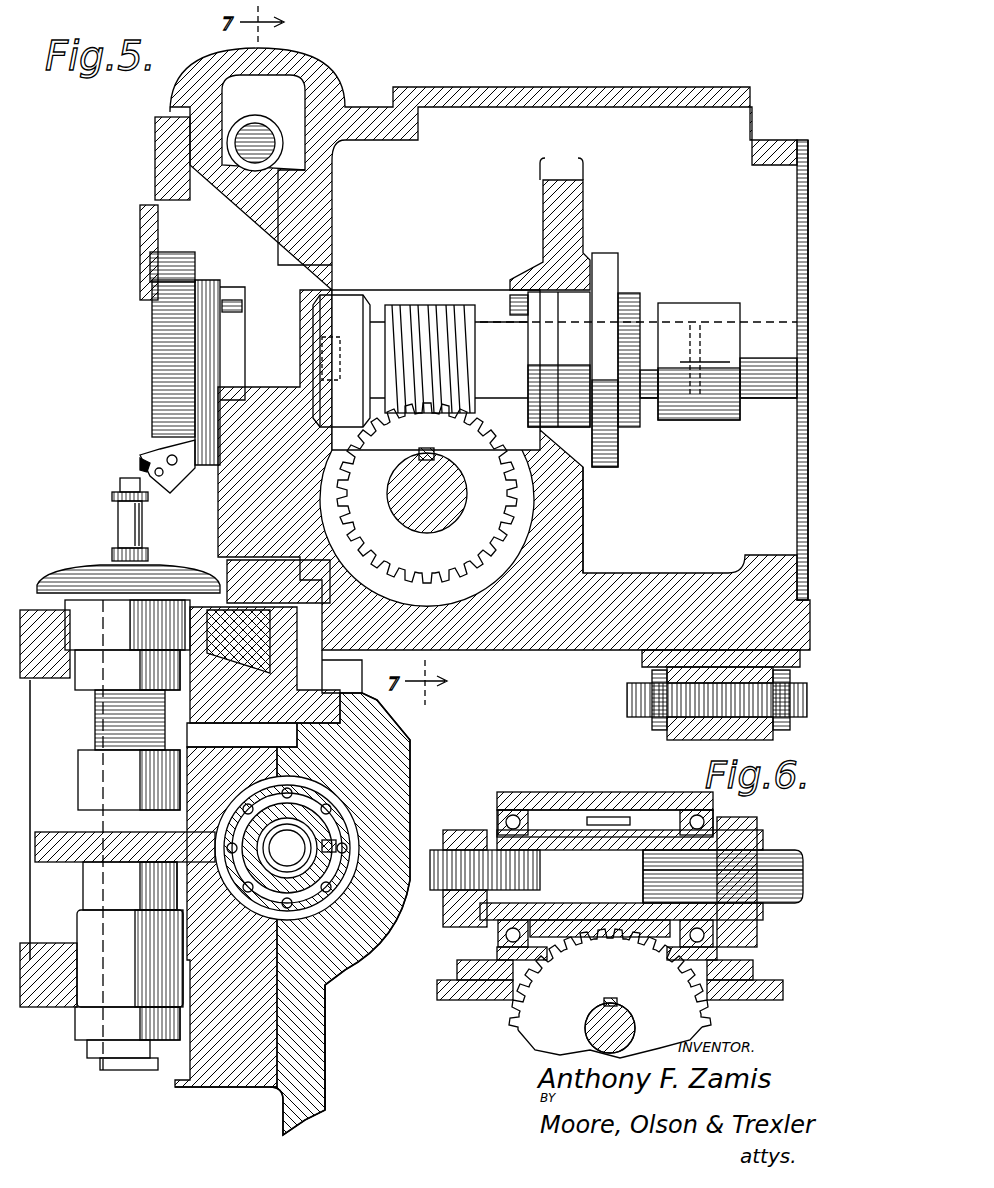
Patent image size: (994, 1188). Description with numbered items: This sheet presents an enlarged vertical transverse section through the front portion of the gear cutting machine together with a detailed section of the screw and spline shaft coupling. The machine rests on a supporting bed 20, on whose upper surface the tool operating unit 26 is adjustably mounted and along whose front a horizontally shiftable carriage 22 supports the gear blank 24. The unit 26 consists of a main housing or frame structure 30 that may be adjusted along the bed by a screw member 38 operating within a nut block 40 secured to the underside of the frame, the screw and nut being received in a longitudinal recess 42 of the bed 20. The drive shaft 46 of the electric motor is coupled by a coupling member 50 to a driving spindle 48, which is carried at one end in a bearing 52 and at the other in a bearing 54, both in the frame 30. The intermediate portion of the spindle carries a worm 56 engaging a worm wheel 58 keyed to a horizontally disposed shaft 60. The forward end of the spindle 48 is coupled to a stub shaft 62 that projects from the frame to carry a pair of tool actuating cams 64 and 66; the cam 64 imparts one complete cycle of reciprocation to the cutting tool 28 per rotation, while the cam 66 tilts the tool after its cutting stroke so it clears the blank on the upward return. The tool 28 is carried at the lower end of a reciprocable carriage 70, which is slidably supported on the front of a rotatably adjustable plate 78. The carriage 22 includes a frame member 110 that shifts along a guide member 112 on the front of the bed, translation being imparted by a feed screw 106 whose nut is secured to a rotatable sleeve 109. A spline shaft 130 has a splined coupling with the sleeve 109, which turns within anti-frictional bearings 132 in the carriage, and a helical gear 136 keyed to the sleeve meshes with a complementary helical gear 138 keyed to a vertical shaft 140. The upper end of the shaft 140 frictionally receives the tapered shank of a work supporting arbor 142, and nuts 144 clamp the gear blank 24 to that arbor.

In FIG. 5, the supporting bed 20 is at (270, 1118).
In FIG. 5, the horizontally shiftable carriage 22 is at (70, 545).
In FIG. 5, the gear blank 24 is at (94, 492).
In FIG. 5, the tool operating unit 26 is at (544, 73).
In FIG. 5, the cutting tool 28 is at (158, 453).
In FIG. 5, the main housing or frame structure 30 is at (583, 500).
In FIG. 5, the screw member 38 is at (627, 710).
In FIG. 5, the nut block 40 is at (706, 585).
In FIG. 5, the longitudinal recess 42 is at (511, 718).
In FIG. 5, the drive shaft 46 is at (762, 402).
In FIG. 5, the driving spindle 48 is at (652, 403).
In FIG. 5, the coupling member 50 is at (683, 312).
In FIG. 5, the bearing 52 is at (545, 263).
In FIG. 5, the bearing 54 is at (280, 300).
In FIG. 5, the worm 56 is at (459, 304).
In FIG. 5, the worm wheel 58 is at (427, 493).
In FIG. 5, the horizontally disposed shaft 60 is at (442, 478).
In FIG. 5, the stub shaft 62 is at (225, 330).
In FIG. 5, the tool actuating cam 64 is at (178, 355).
In FIG. 5, the tool actuating cam 66 is at (205, 340).
In FIG. 5, the reciprocable carriage 70 is at (230, 287).
In FIG. 5, the rotatably adjustable disc or plate 78 is at (334, 182).
In FIG. 5, the feed screw 106 is at (360, 770).
In FIG. 6, the feed screw 106 is at (427, 893).
In FIG. 5, the rotatable sleeve 109 is at (397, 707).
In FIG. 6, the rotatable sleeve 109 is at (615, 913).
In FIG. 5, the frame member 110 is at (203, 627).
In FIG. 5, the guide member 112 is at (227, 687).
In FIG. 6, the spline shaft 130 is at (770, 860).
In FIG. 6, the anti-frictional bearings 132 is at (497, 940).
In FIG. 5, the helical gear 136 is at (307, 893).
In FIG. 6, the helical gear 136 is at (603, 820).
In FIG. 5, the helical gear 138 is at (55, 858).
In FIG. 6, the helical gear 138 is at (677, 1010).
In FIG. 5, the vertical shaft 140 is at (107, 823).
In FIG. 6, the vertical shaft 140 is at (593, 1037).
In FIG. 5, the work supporting arbor 142 is at (132, 523).
In FIG. 5, the nuts 144 is at (138, 490).